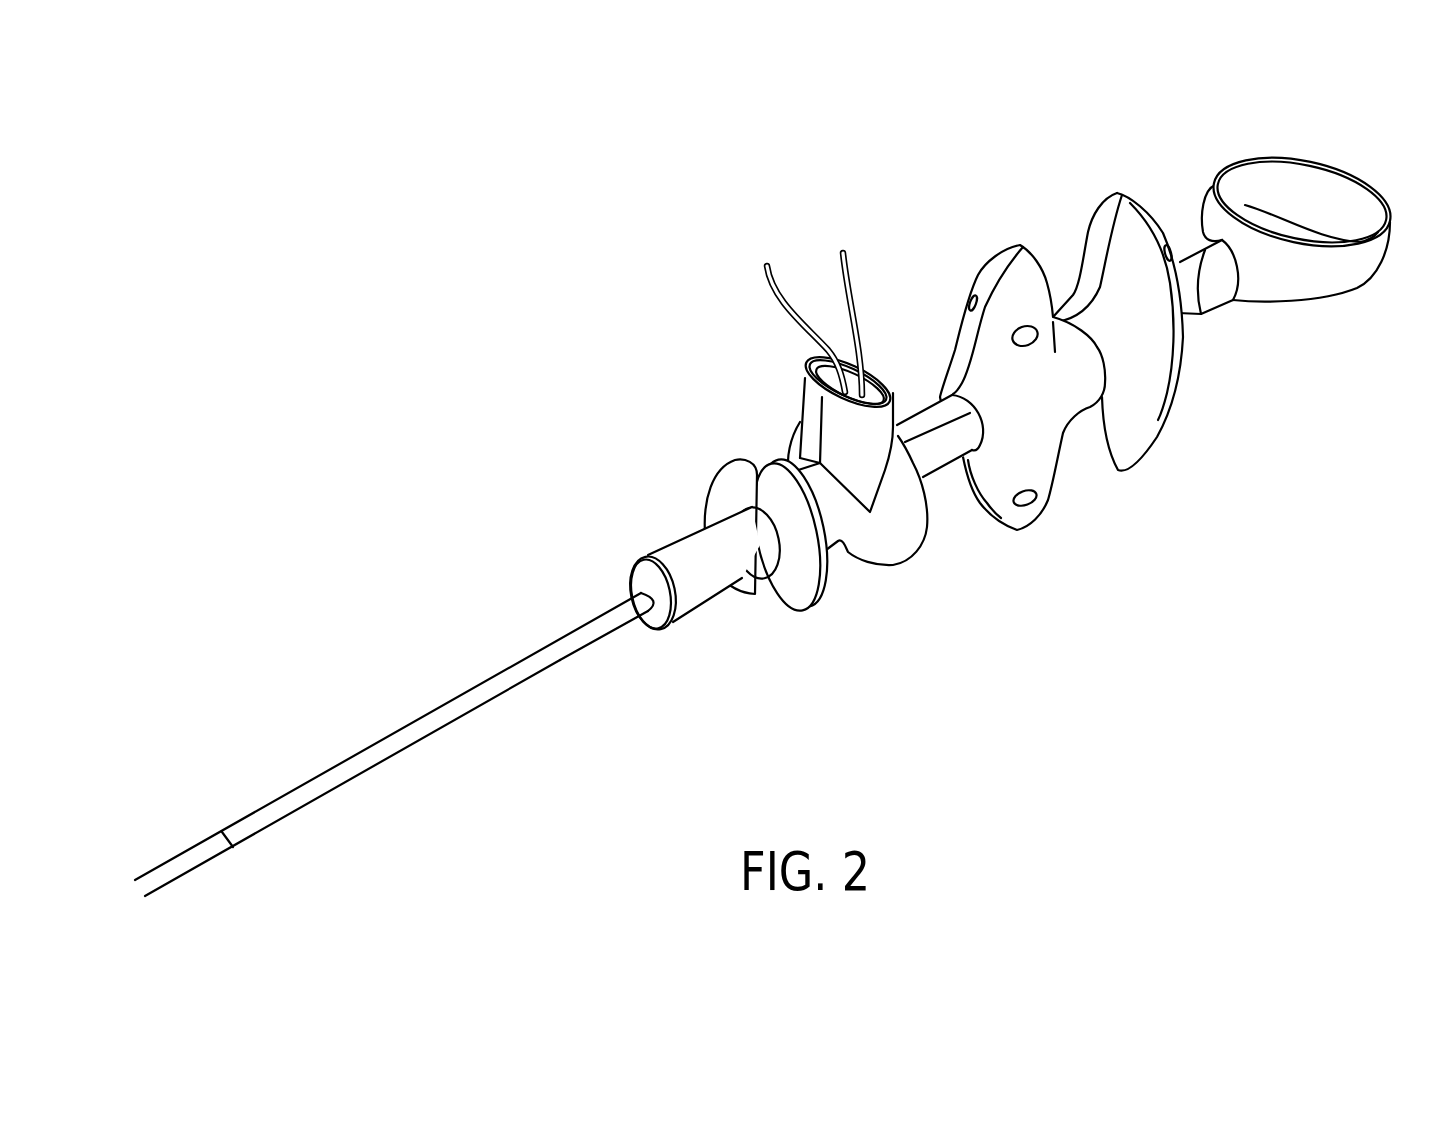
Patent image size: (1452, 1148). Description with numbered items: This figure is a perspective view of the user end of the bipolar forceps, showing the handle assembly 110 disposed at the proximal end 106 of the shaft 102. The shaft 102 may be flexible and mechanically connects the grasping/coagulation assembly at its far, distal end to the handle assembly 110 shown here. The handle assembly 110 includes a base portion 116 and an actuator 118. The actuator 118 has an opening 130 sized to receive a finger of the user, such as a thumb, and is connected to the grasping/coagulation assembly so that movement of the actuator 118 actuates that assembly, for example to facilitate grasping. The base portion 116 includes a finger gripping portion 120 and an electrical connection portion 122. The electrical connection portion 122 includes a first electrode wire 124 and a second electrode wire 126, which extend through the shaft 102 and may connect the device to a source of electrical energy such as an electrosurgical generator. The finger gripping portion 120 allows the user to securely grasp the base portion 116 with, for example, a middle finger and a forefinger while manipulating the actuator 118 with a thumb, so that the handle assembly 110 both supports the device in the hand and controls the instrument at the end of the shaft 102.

The shaft 102 is at (290, 812).
The proximal end 106 is at (607, 641).
The handle assembly 110 is at (790, 488).
The base portion 116 is at (1034, 408).
The actuator 118 is at (1323, 193).
The finger gripping portion 120 is at (992, 258).
The electrical connection portion 122 is at (886, 378).
The first electrode wire 124 is at (777, 298).
The second electrode wire 126 is at (853, 284).
The opening 130 is at (1324, 186).